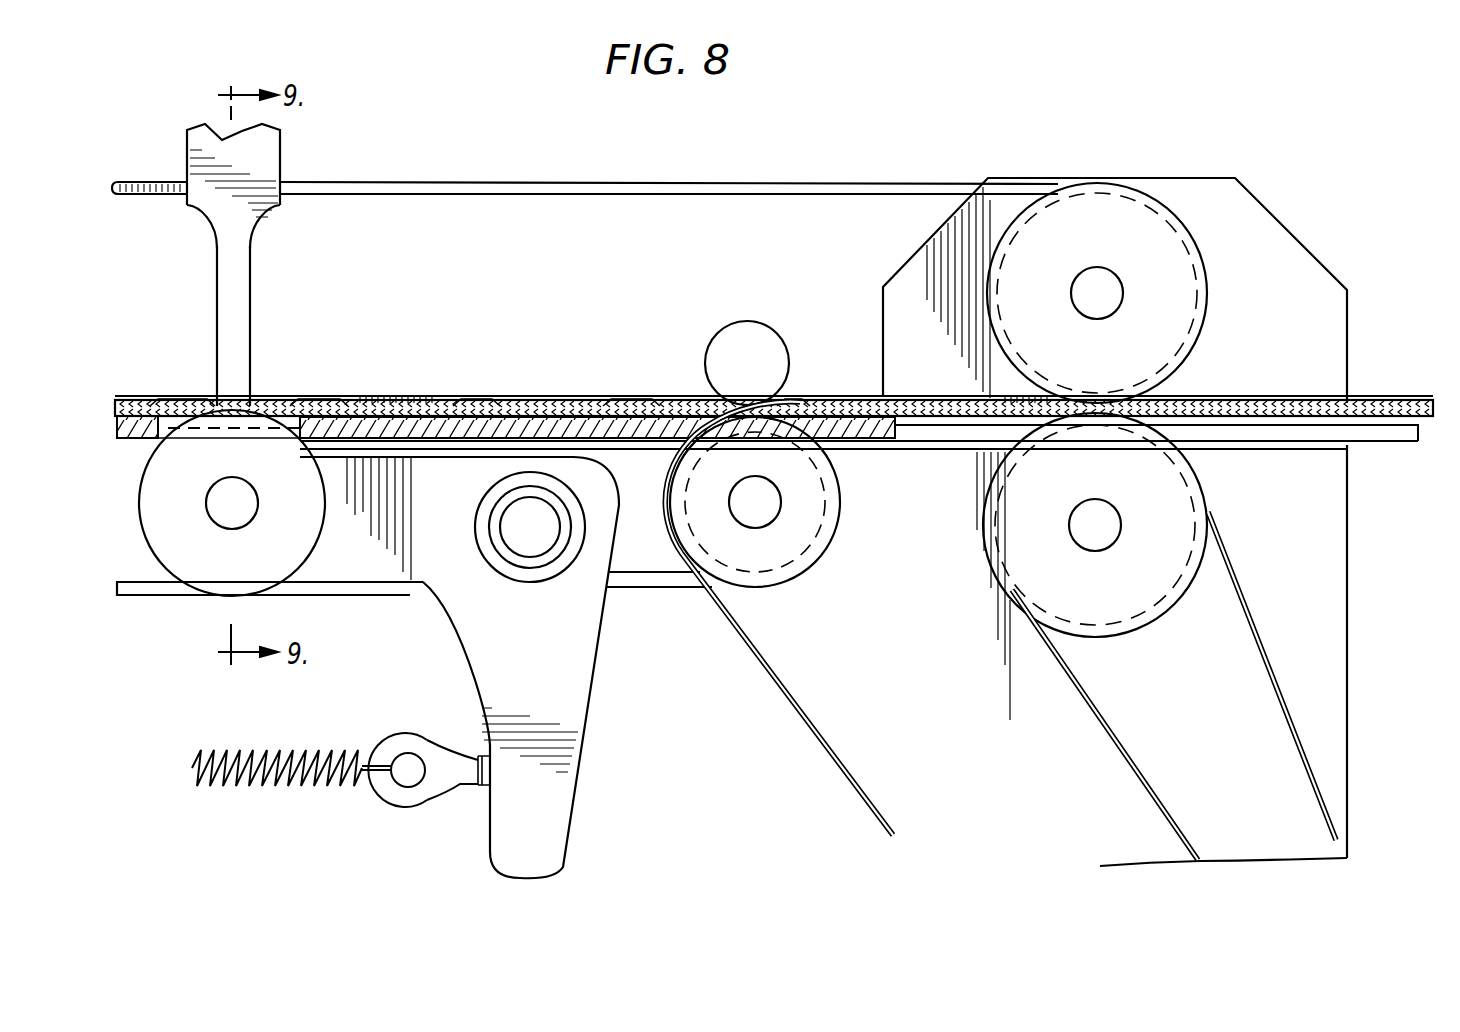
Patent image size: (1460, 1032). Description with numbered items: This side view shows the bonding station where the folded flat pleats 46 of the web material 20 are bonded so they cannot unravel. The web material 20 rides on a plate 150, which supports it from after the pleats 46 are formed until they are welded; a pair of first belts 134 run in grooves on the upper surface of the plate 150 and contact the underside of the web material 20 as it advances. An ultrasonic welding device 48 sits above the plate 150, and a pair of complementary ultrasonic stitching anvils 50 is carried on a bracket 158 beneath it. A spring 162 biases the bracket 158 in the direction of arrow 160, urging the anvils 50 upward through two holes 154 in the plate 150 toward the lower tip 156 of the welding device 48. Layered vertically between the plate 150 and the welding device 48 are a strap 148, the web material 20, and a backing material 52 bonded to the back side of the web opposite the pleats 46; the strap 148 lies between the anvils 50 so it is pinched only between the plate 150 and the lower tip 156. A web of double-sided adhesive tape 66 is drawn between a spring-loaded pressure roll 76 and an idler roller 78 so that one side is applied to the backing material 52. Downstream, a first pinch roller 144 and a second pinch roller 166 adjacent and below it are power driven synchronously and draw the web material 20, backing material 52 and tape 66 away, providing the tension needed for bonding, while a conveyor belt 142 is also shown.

The web material 20 is at (115, 412).
The flat pleats 46 is at (478, 400).
The ultrasonic welding device 48 is at (244, 276).
The ultrasonic stitching anvils 50 is at (152, 536).
The backing material 52 is at (120, 433).
The web of double-sided adhesive tape 66 is at (768, 650).
The spring-loaded pressure roll 76 is at (738, 322).
The idler roller 78 is at (812, 528).
The first belts 134 is at (125, 447).
The conveyor belt 142 is at (715, 182).
The first pinch roller 144 is at (1066, 217).
The strap 148 is at (199, 402).
The plate 150 is at (872, 444).
The holes 154 is at (177, 430).
The lower tip 156 is at (237, 378).
The bracket 158 is at (583, 658).
The arrow 160 is at (533, 822).
The spring 162 is at (295, 788).
The second pinch roller 166 is at (1195, 490).